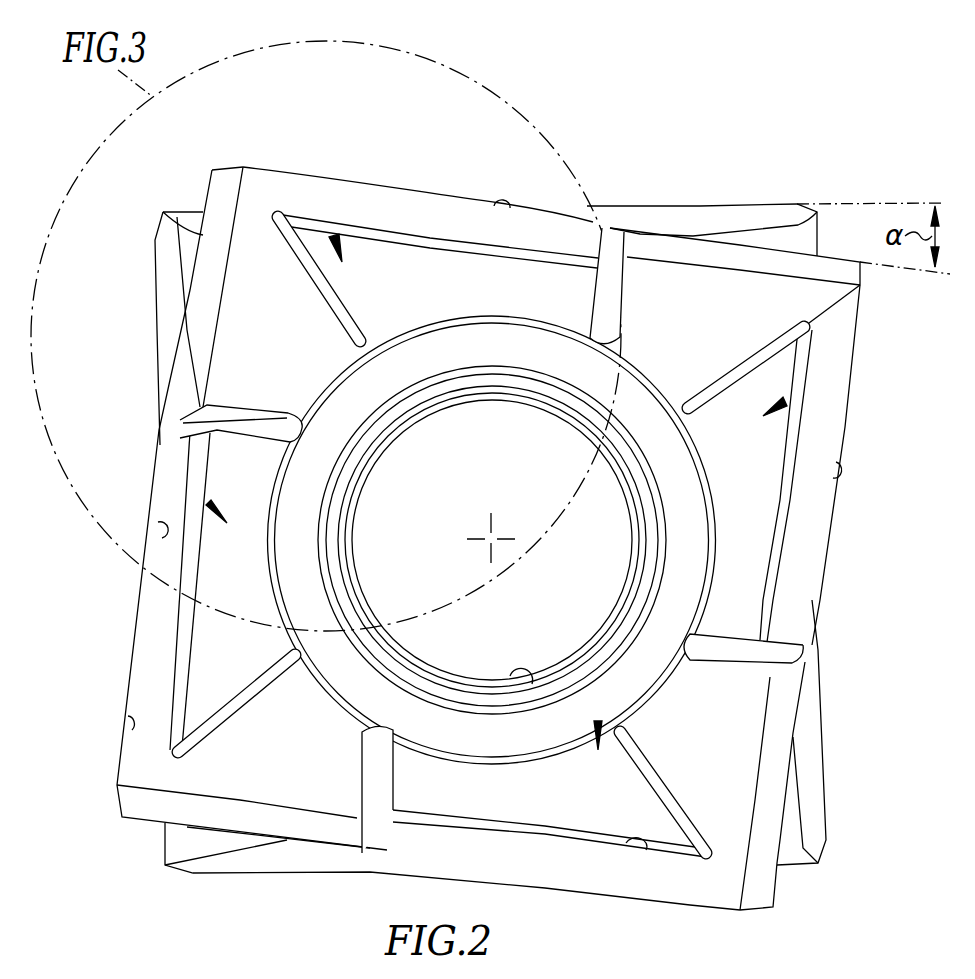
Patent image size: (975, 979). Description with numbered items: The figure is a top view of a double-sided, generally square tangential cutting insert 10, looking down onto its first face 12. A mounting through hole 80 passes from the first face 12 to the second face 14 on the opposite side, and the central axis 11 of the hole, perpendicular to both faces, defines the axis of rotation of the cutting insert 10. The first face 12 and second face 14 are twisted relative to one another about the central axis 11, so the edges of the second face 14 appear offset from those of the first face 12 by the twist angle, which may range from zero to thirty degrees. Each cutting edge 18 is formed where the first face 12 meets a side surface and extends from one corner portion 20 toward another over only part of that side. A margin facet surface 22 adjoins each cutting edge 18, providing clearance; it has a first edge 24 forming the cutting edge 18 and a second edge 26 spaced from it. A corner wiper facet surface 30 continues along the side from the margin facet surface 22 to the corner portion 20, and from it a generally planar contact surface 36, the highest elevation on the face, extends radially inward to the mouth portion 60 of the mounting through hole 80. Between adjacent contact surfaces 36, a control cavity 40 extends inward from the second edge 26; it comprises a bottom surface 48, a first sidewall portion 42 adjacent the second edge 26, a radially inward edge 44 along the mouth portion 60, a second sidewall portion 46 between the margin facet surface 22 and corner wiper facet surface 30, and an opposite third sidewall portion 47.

The cutting insert 10 is at (802, 98).
The central axis 11 is at (490, 538).
The first face 12 is at (758, 556).
The second face 14 is at (690, 205).
The cutting edge 18 is at (503, 203).
The corner portion 20 is at (113, 800).
The margin facet surface 22 is at (325, 183).
The first edge 24 is at (392, 186).
The second edge 26 is at (398, 240).
The corner wiper facet surface 30 is at (205, 345).
The contact surface 36 is at (295, 363).
The control cavity 40 is at (335, 235).
The first sidewall portion 42 is at (440, 242).
The radially inward edge 44 is at (463, 318).
The second sidewall portion 46 is at (262, 435).
The third sidewall portion 47 is at (305, 272).
The bottom surface 48 is at (375, 248).
The mouth portion 60 is at (288, 592).
The mounting through hole 80 is at (418, 418).